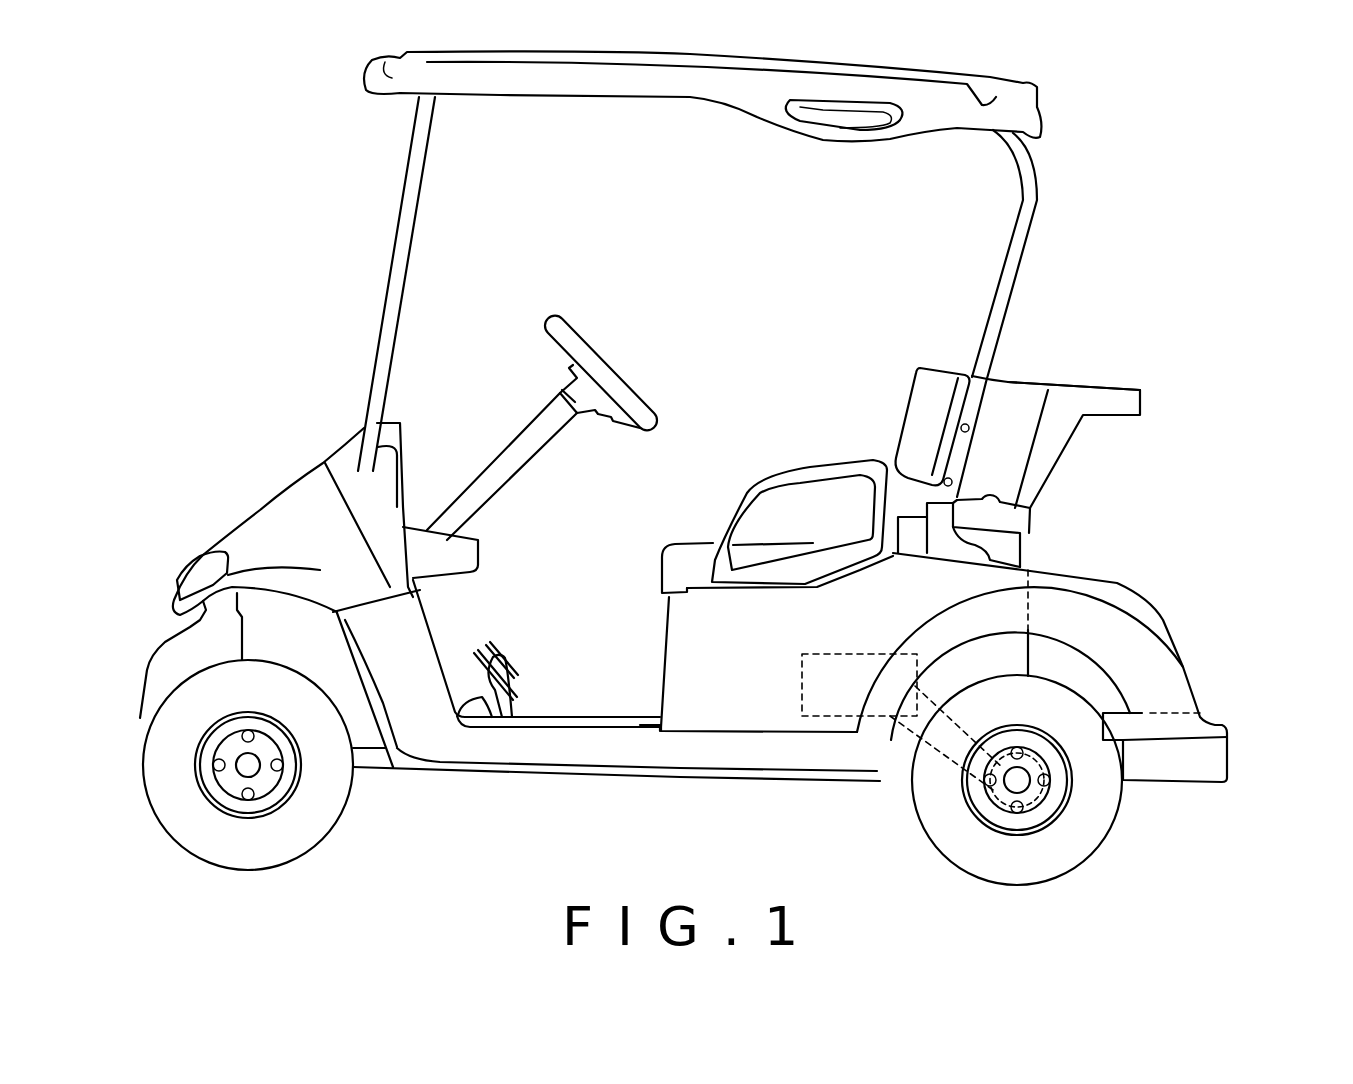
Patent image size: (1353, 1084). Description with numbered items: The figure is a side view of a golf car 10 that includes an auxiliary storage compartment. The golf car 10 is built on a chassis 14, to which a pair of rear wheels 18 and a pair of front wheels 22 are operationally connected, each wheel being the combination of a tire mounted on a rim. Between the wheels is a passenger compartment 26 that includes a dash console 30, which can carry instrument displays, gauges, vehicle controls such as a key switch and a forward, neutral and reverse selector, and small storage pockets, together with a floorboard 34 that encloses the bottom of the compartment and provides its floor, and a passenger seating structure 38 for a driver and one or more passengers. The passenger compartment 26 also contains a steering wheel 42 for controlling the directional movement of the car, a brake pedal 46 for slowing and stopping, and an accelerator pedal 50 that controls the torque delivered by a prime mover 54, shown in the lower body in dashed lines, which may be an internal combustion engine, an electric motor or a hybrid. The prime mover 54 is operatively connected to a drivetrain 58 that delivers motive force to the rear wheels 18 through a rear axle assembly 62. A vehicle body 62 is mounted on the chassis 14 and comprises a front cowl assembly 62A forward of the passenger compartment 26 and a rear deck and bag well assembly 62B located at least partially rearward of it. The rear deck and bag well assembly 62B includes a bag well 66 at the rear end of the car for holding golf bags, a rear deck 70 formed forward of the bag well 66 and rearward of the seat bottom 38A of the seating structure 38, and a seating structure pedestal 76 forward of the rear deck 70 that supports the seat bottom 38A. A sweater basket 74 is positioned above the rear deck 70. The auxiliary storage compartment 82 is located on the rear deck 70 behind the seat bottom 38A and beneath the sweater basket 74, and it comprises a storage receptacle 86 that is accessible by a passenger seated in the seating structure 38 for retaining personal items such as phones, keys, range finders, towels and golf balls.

The golf car 10 is at (256, 146).
The chassis 14 is at (403, 748).
The rear wheels 18 is at (1083, 823).
The front wheels 22 is at (177, 793).
The passenger compartment 26 is at (832, 262).
The dash console 30 is at (400, 443).
The floorboard 34 is at (568, 718).
The passenger seating structure 38 is at (905, 400).
The seat bottom 38A is at (757, 553).
The steering wheel 42 is at (572, 342).
The brake pedal 46 is at (493, 652).
The accelerator pedal 50 is at (520, 690).
The prime mover 54 is at (830, 682).
The drivetrain 58 is at (955, 732).
The vehicle body 62 is at (223, 484).
The front cowl assembly 62A is at (300, 520).
The rear deck and bag well assembly 62B is at (993, 598).
The bag well 66 is at (1180, 636).
The rear deck 70 is at (1083, 387).
The sweater basket 74 is at (1008, 377).
The seating structure pedestal 76 is at (690, 620).
The auxiliary storage compartment 82 is at (1038, 528).
The storage receptacle 86 is at (985, 537).